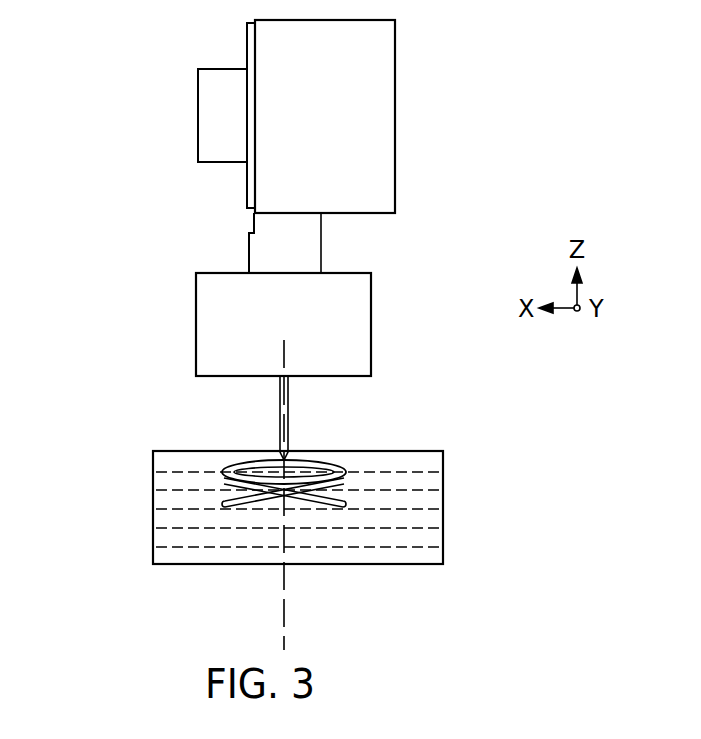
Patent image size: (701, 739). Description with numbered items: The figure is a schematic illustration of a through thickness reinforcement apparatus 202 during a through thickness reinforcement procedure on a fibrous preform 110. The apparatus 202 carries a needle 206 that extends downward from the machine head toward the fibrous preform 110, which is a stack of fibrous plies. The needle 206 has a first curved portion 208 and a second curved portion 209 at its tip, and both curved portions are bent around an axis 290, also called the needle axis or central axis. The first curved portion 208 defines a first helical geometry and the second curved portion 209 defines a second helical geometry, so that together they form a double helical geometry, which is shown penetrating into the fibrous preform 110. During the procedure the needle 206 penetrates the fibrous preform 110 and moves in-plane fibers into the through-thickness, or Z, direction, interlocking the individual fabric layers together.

The apparatus 202 is at (538, 74).
The needle 206 is at (289, 437).
The first curved portion 208 is at (347, 478).
The second curved portion 209 is at (224, 470).
The fibrous preform 110 is at (153, 490).
The axis 290 is at (284, 612).